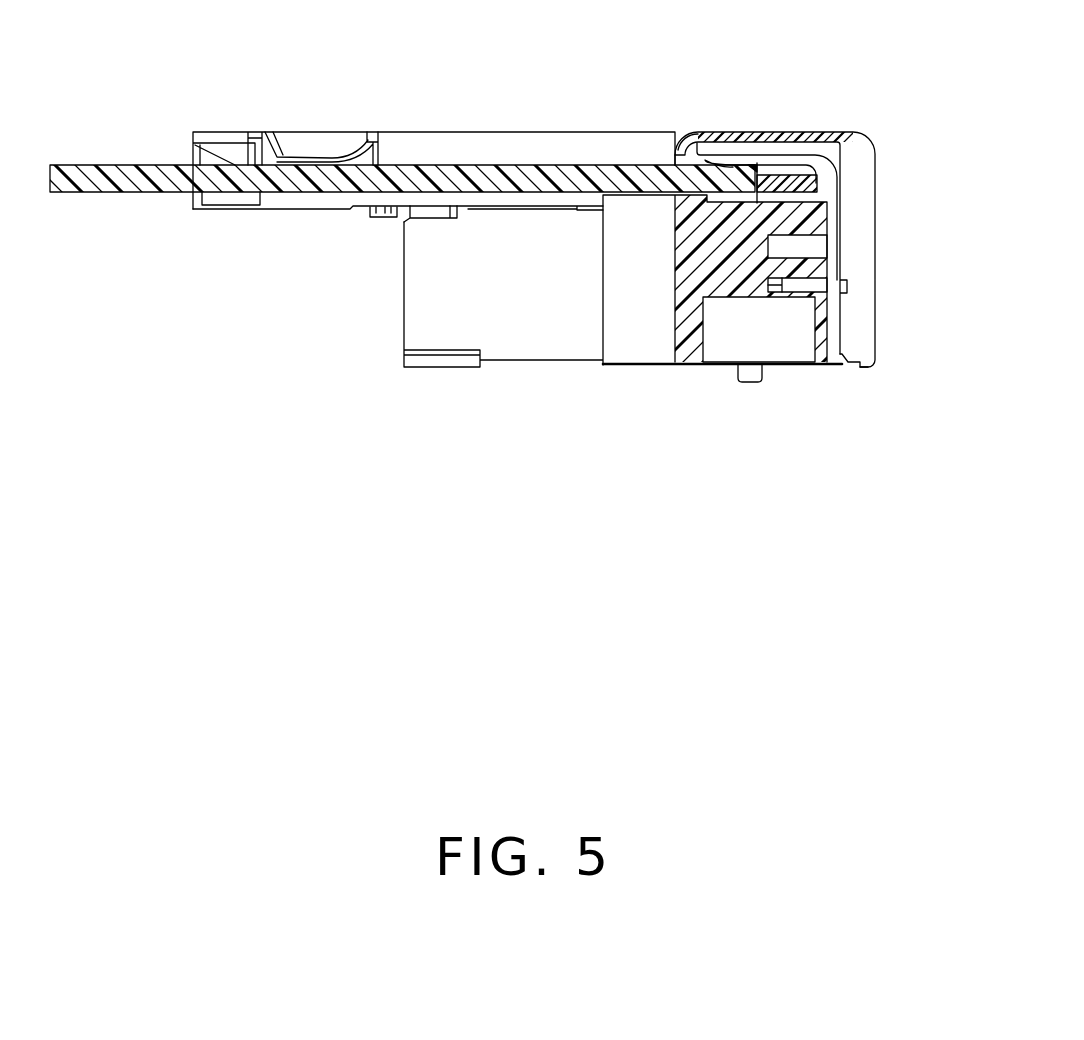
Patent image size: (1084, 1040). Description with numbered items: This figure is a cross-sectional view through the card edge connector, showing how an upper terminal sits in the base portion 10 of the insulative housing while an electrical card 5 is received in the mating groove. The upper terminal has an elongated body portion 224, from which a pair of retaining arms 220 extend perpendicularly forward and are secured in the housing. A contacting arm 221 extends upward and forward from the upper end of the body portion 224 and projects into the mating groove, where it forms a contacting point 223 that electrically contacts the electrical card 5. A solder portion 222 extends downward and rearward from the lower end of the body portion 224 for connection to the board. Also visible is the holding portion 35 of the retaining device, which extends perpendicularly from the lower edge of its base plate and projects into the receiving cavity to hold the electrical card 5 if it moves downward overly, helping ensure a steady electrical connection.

The electrical card 5 is at (168, 175).
The base portion 10 is at (730, 250).
The holding portion 35 is at (380, 218).
The retaining arms 220 is at (803, 280).
The contacting arm 221 is at (798, 133).
The solder portion 222 is at (850, 363).
The contacting point 223 is at (732, 133).
The body portion 224 is at (833, 243).